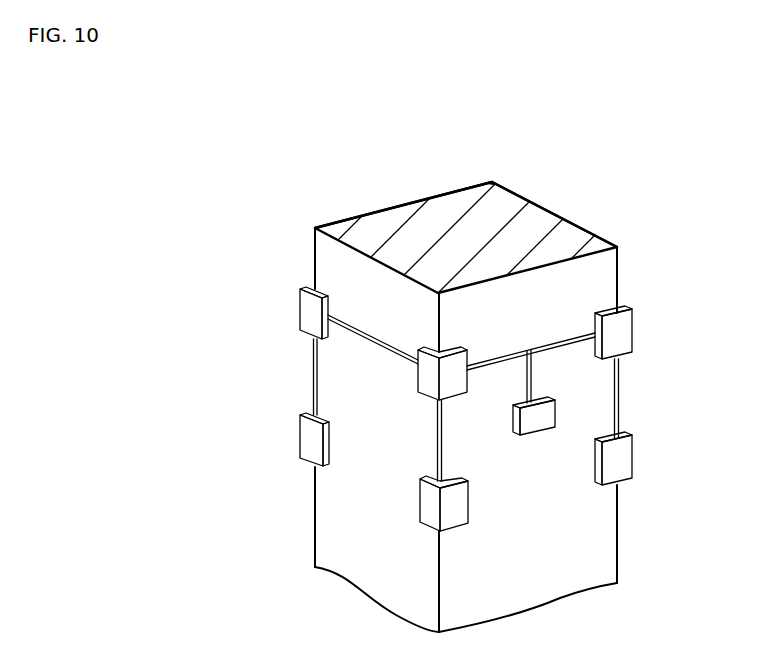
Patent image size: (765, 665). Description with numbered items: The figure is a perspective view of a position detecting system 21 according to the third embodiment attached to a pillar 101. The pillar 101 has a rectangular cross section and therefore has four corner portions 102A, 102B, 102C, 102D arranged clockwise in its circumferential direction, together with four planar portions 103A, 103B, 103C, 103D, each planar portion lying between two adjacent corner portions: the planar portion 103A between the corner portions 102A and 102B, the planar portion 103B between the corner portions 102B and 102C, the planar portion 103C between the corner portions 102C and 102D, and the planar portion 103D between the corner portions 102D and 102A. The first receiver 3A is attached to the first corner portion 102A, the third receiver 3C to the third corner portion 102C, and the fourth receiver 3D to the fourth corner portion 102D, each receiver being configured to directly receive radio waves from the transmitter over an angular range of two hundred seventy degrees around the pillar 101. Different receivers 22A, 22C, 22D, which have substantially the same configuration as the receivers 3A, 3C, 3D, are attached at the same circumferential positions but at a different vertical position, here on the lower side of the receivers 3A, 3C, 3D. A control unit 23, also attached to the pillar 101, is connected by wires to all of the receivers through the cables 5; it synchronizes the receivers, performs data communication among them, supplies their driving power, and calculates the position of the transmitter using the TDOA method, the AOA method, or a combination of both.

The position detecting system 21 is at (578, 162).
The pillar 101 is at (447, 200).
The first corner portion 102A is at (314, 522).
The second corner portion 102B is at (492, 182).
The third corner portion 102C is at (618, 548).
The fourth corner portion 102D is at (438, 607).
The planar portion 103A is at (368, 213).
The planar portion 103B is at (542, 218).
The planar portion 103C is at (575, 582).
The planar portion 103D is at (367, 577).
The cables 5 is at (359, 336).
The first receiver 3A is at (300, 314).
The third receiver 3C is at (623, 330).
The fourth receiver 3D is at (427, 383).
The different receiver 22A is at (300, 444).
The different receiver 22C is at (623, 460).
The different receiver 22D is at (427, 512).
The control unit 23 is at (540, 426).